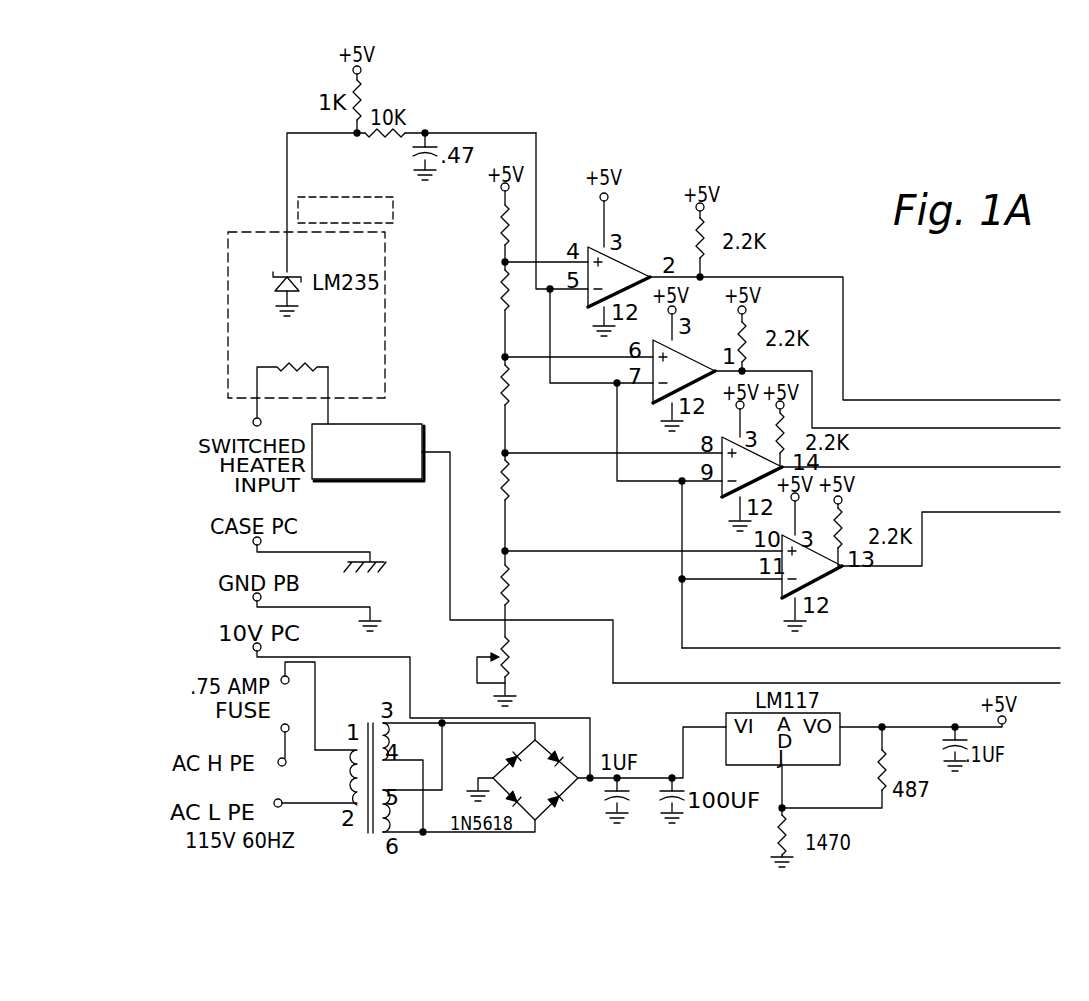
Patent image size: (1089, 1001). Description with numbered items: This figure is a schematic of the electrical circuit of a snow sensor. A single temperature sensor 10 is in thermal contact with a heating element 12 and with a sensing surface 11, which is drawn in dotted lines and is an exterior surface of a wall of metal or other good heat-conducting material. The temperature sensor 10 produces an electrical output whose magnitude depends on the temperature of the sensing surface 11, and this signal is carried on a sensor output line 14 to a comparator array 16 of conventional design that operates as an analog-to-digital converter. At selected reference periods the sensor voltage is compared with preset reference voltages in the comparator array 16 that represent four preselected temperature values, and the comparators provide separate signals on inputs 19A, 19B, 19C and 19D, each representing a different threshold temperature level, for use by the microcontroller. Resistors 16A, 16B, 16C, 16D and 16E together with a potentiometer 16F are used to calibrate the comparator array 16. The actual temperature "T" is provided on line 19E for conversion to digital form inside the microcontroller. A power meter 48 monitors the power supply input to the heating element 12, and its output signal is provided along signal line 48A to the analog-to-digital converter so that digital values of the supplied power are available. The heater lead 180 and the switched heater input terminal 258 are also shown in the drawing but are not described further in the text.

The temperature sensor 10 is at (394, 211).
The sensing surface 11 is at (228, 282).
The heating element 12 is at (278, 366).
The sensor output line 14 is at (462, 139).
The comparator array 16 is at (650, 252).
The resistor 16A is at (513, 225).
The resistor 16B is at (498, 276).
The resistor 16C is at (524, 392).
The resistor 16D is at (527, 486).
The resistor 16E is at (525, 588).
The potentiometer 16F is at (523, 659).
The microcontroller input 19A is at (883, 400).
The microcontroller input 19B is at (904, 423).
The microcontroller input 19C is at (871, 468).
The microcontroller input 19D is at (883, 570).
The actual temperature line 19E is at (722, 648).
The power meter 48 is at (409, 424).
The signal line 48A is at (653, 683).
The heater lead 180 is at (351, 390).
The switched heater input terminal 258 is at (250, 420).